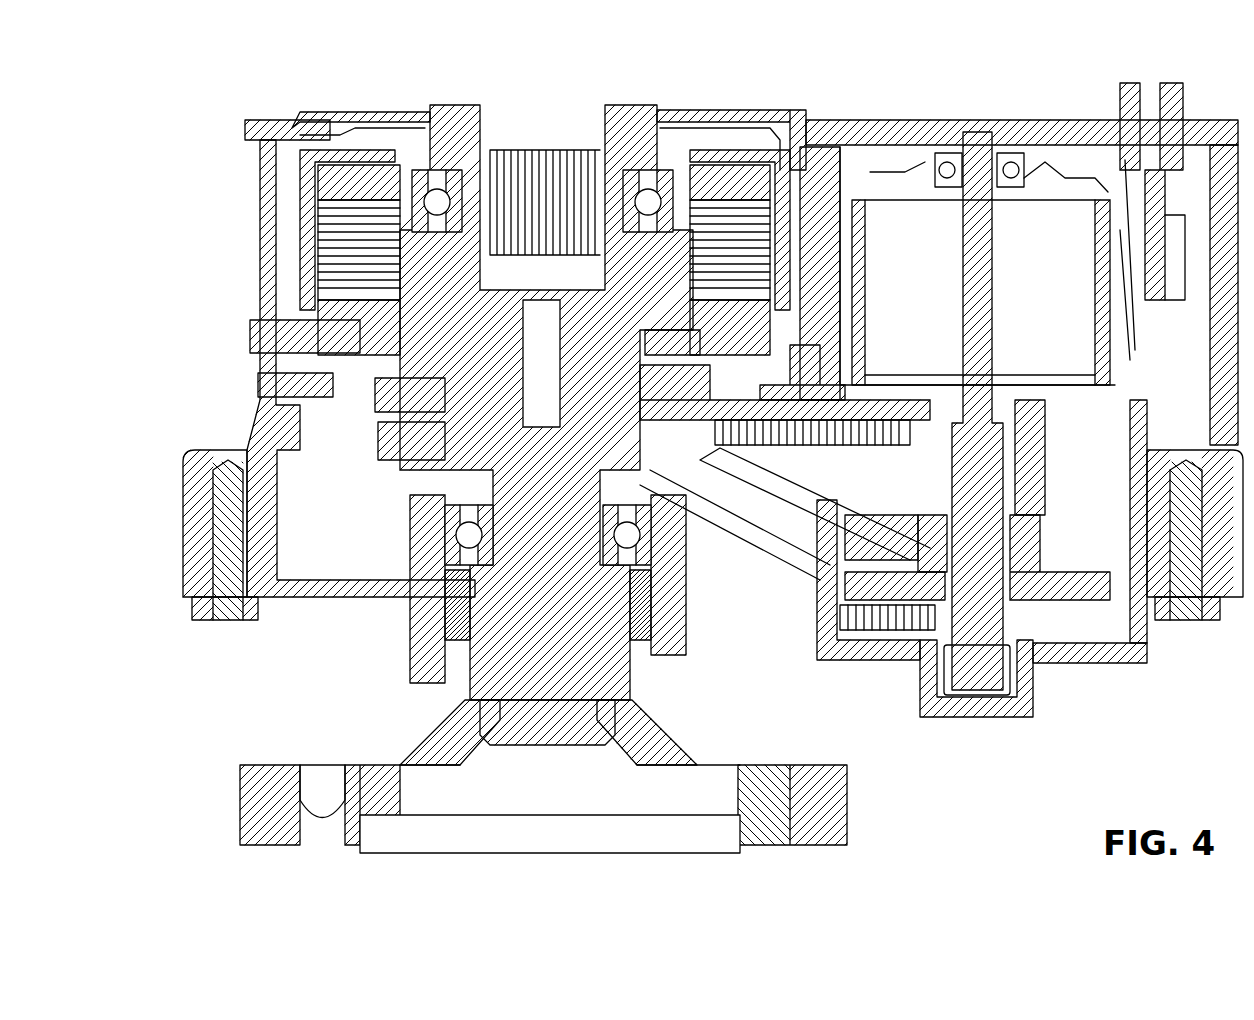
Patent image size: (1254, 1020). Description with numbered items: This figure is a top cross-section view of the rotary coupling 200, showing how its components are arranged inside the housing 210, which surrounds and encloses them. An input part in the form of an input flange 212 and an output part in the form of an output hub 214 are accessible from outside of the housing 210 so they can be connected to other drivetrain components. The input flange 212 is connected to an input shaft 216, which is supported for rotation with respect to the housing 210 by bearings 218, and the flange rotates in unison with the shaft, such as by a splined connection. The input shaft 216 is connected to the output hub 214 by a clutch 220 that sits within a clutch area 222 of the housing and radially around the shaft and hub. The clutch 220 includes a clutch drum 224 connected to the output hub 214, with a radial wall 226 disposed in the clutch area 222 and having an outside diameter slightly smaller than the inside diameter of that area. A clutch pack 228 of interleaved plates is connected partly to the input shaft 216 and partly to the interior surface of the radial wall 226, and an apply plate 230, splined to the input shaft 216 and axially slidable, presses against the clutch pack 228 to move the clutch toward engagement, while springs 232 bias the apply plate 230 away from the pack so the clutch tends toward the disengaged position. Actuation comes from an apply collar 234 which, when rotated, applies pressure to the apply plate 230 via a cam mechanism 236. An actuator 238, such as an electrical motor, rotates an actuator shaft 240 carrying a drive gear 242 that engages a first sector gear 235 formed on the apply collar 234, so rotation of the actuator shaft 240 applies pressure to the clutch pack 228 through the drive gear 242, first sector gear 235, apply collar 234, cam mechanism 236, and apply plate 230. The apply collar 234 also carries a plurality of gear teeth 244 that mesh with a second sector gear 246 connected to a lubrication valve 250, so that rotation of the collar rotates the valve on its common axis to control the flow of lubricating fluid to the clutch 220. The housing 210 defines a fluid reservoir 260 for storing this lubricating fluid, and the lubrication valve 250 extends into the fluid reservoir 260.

The rotary coupling 200 is at (232, 108).
The housing 210 is at (1100, 672).
The input flange 212 is at (840, 795).
The output hub 214 is at (655, 112).
The input shaft 216 is at (582, 683).
The bearings 218 is at (440, 188).
The clutch 220 is at (290, 195).
The clutch area 222 is at (262, 256).
The clutch drum 224 is at (348, 135).
The radial wall 226 is at (305, 268).
The clutch pack 228 is at (318, 232).
The apply plate 230 is at (355, 340).
The springs 232 is at (495, 335).
The apply collar 234 is at (376, 440).
The first sector gear 235 is at (920, 530).
The cam mechanism 236 is at (372, 400).
The actuator 238 is at (1045, 165).
The actuator shaft 240 is at (972, 690).
The drive gear 242 is at (1045, 535).
The gear teeth 244 is at (735, 433).
The second sector gear 246 is at (770, 450).
The lubrication valve 250 is at (805, 360).
The fluid reservoir 260 is at (845, 332).